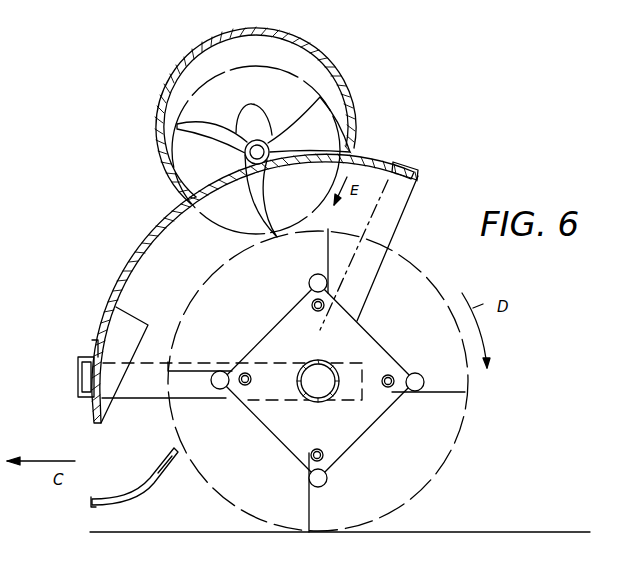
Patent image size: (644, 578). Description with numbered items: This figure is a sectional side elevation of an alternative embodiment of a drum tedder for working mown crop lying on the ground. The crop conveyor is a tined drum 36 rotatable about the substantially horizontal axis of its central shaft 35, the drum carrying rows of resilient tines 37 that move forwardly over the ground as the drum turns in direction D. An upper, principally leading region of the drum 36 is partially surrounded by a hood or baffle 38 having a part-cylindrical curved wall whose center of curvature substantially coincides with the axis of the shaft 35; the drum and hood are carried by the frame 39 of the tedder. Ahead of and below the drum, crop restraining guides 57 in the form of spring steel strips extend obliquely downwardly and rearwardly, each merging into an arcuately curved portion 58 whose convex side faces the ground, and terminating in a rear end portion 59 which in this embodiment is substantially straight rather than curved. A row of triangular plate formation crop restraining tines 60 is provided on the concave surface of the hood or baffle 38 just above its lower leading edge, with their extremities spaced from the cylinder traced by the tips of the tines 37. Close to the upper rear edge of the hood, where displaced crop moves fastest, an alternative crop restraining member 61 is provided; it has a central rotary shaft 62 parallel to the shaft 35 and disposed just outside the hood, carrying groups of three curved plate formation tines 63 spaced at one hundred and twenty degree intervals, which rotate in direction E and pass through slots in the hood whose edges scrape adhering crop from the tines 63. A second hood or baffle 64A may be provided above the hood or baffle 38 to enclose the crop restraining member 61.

The central shaft 35 is at (320, 383).
The tined drum 36 is at (358, 441).
The resilient tines 37 is at (328, 256).
The hood or baffle 38 is at (140, 247).
The frame 39 is at (78, 380).
The crop restraining guide 57 is at (92, 504).
The arcuately curved portion 58 is at (123, 498).
The rear end portion 59 is at (163, 461).
The crop restraining tines 60 is at (127, 320).
The crop restraining member 61 is at (298, 121).
The central rotary shaft 62 is at (245, 152).
The curved plate formation tines 63 is at (266, 197).
The second hood or baffle 64A is at (167, 160).